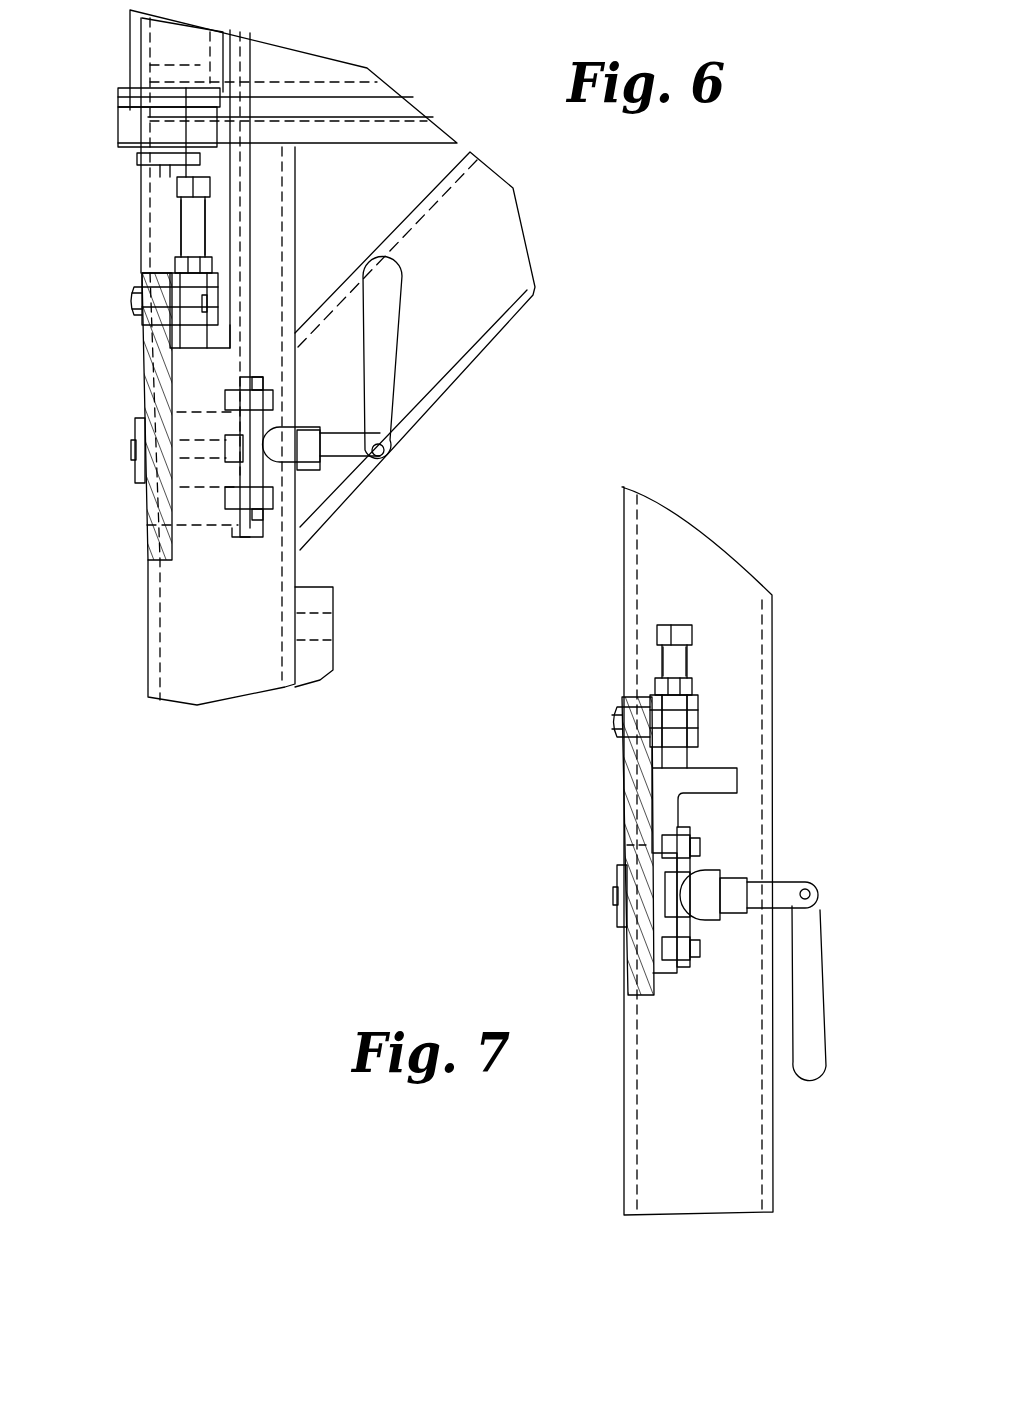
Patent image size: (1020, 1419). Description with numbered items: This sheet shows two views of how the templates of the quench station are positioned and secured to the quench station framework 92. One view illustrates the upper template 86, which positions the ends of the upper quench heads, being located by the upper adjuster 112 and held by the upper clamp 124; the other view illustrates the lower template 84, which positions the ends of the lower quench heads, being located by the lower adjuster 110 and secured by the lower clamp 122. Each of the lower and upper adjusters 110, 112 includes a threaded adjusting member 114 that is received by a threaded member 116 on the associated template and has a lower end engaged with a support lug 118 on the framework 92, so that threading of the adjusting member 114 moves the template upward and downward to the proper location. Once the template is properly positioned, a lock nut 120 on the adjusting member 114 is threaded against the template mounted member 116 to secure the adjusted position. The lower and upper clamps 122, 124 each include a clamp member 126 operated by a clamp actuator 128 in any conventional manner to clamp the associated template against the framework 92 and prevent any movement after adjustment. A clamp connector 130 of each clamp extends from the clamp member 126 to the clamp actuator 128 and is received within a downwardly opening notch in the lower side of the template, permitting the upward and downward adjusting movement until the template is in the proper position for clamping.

In FIG. 7, the lower template 84 is at (638, 810).
In FIG. 6, the upper template 86 is at (155, 377).
In FIG. 6, the framework 92 is at (143, 601).
In FIG. 7, the framework 92 is at (622, 1112).
In FIG. 7, the lower adjuster 110 is at (705, 693).
In FIG. 6, the upper adjuster 112 is at (218, 257).
In FIG. 6, the threaded adjusting member 114 is at (193, 222).
In FIG. 7, the threaded adjusting member 114 is at (670, 658).
In FIG. 6, the threaded member 116 is at (193, 283).
In FIG. 7, the threaded member 116 is at (700, 717).
In FIG. 6, the support lug 118 is at (182, 356).
In FIG. 7, the support lug 118 is at (720, 782).
In FIG. 6, the lock nut 120 is at (176, 262).
In FIG. 7, the lock nut 120 is at (673, 688).
In FIG. 7, the lower clamp 122 is at (828, 890).
In FIG. 6, the upper clamp 124 is at (403, 458).
In FIG. 6, the clamp member 126 is at (140, 466).
In FIG. 7, the clamp member 126 is at (617, 920).
In FIG. 6, the clamp actuator 128 is at (412, 360).
In FIG. 7, the clamp actuator 128 is at (822, 935).
In FIG. 6, the clamp connector 130 is at (200, 442).
In FIG. 7, the clamp connector 130 is at (623, 857).